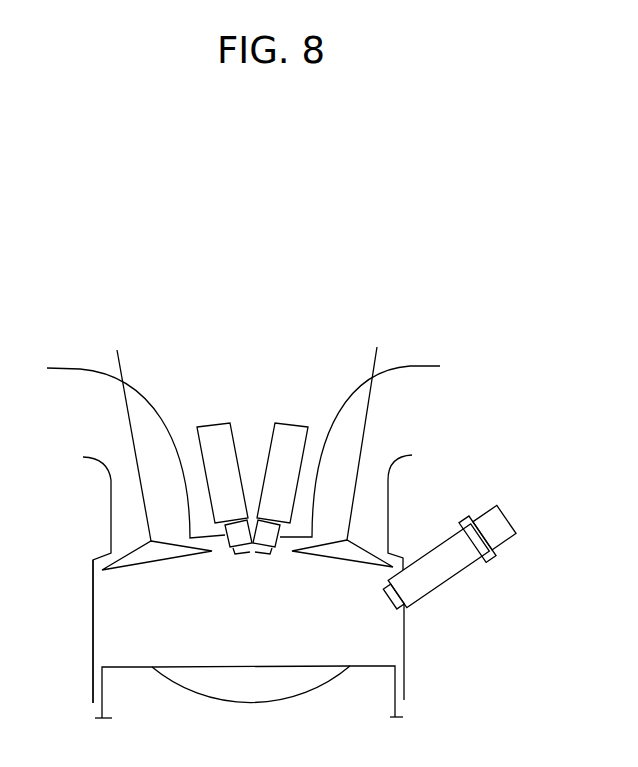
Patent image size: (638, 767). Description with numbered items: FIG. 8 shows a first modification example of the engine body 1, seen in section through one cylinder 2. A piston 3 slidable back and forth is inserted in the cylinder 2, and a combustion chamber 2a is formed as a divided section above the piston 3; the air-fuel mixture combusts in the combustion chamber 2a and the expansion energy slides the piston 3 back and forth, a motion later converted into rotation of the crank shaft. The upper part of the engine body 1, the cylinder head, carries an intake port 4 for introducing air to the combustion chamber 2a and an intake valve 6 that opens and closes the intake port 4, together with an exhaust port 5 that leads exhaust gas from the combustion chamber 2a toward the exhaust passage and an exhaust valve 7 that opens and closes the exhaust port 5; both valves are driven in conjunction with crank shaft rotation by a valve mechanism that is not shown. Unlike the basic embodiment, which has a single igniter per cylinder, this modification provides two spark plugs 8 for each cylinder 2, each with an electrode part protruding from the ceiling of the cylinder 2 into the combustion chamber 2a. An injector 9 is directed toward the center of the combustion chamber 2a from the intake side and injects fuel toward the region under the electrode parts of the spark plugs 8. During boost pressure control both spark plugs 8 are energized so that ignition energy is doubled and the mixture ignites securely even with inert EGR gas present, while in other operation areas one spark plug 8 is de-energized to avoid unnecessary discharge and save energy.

The engine body 1 is at (263, 322).
The cylinder 2 is at (407, 650).
The combustion chamber 2a is at (240, 645).
The piston 3 is at (113, 683).
The intake port 4 is at (381, 484).
The exhaust port 5 is at (118, 515).
The intake valve 6 is at (378, 360).
The exhaust valve 7 is at (122, 360).
The spark plug 8 is at (212, 435).
The injector 9 is at (508, 522).